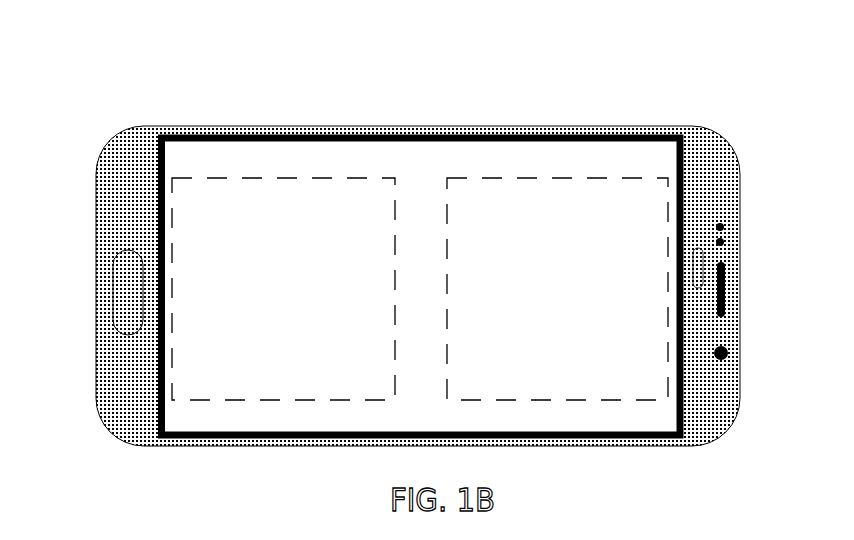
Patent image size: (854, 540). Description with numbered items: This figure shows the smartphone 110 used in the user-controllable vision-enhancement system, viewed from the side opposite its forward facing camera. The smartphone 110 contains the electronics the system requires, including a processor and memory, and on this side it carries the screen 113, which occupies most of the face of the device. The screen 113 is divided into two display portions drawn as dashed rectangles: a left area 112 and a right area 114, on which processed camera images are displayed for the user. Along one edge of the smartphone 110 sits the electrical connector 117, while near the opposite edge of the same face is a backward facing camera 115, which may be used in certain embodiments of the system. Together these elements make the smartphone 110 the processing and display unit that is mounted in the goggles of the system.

The smartphone 110 is at (437, 60).
The left area 112 is at (251, 178).
The screen 113 is at (436, 176).
The right area 114 is at (534, 178).
The backward facing camera 115 is at (721, 360).
The electrical connector 117 is at (98, 287).